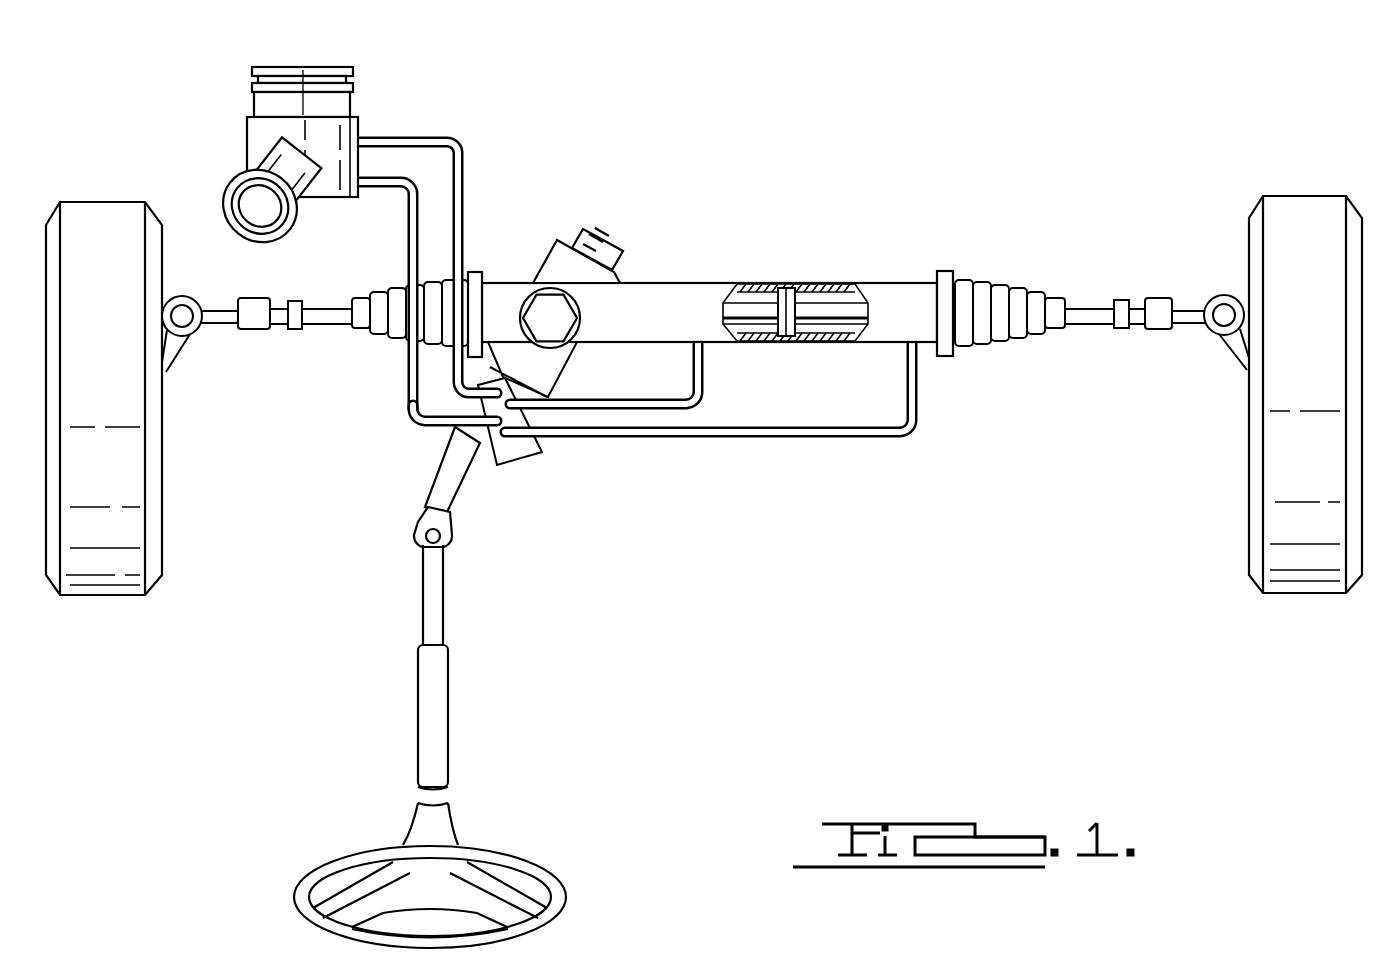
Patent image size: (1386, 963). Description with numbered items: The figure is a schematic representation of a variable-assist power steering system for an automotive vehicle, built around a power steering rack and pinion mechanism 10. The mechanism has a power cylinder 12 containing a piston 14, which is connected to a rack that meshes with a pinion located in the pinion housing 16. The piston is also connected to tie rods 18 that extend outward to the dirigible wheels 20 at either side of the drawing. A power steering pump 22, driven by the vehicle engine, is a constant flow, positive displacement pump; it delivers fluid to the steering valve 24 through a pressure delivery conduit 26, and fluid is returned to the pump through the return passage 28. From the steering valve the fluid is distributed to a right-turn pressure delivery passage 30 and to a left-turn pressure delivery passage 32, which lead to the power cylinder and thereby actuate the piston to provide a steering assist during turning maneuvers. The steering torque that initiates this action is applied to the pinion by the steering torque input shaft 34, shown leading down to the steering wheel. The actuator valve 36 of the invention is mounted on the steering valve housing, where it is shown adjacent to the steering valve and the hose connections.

The power steering rack and pinion mechanism 10 is at (686, 282).
The power cylinder 12 is at (893, 290).
The piston 14 is at (786, 300).
The pinion housing 16 is at (553, 259).
The tie rods 18 is at (222, 318).
The dirigible wheels 20 is at (83, 215).
The power steering pump 22 is at (247, 133).
The steering valve 24 is at (452, 428).
The pressure delivery conduit 26 is at (447, 137).
The return passage 28 is at (407, 238).
The right-turn pressure delivery passage 30 is at (664, 410).
The left-turn pressure delivery passage 32 is at (916, 430).
The steering torque input shaft 34 is at (437, 490).
The actuator valve 36 is at (505, 470).